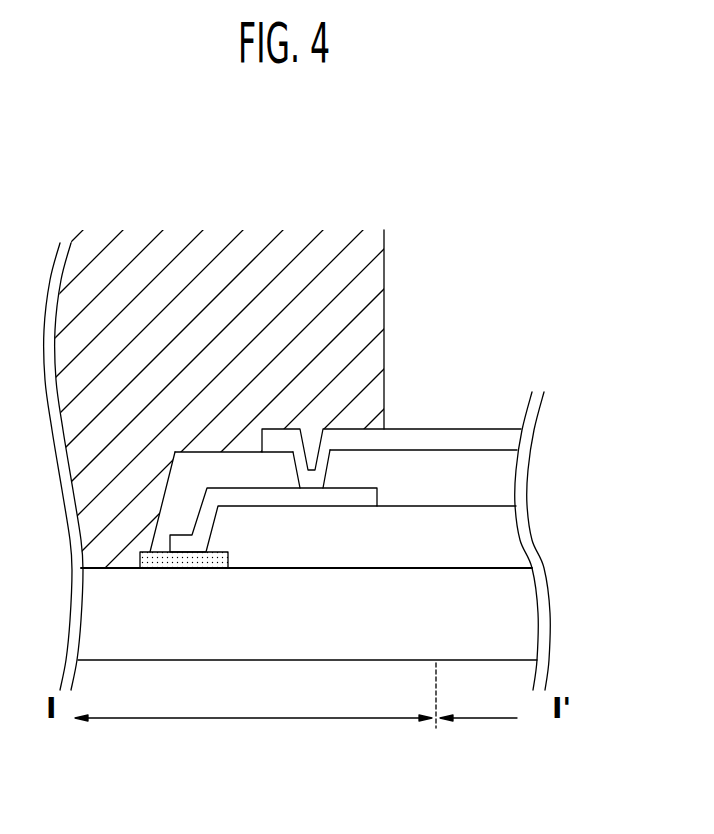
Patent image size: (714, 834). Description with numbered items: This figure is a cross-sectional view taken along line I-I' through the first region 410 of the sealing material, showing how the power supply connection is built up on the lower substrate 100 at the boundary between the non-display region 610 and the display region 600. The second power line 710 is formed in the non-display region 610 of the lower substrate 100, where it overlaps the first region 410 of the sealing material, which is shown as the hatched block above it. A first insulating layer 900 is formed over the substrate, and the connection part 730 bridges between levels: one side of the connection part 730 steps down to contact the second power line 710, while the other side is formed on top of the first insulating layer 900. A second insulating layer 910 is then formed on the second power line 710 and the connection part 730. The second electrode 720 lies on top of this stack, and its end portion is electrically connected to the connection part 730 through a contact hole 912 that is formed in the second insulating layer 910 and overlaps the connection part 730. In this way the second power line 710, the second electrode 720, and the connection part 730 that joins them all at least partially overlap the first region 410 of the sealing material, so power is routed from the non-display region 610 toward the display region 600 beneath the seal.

The first region of the sealing material 410 is at (245, 240).
The second electrode 720 is at (471, 441).
The second insulating layer 910 is at (497, 478).
The contact hole 912 is at (330, 478).
The first insulating layer 900 is at (512, 538).
The connection part 730 is at (323, 507).
The second power line 710 is at (197, 567).
The lower substrate 100 is at (524, 620).
The non-display region 610 is at (253, 754).
The display region 600 is at (501, 754).